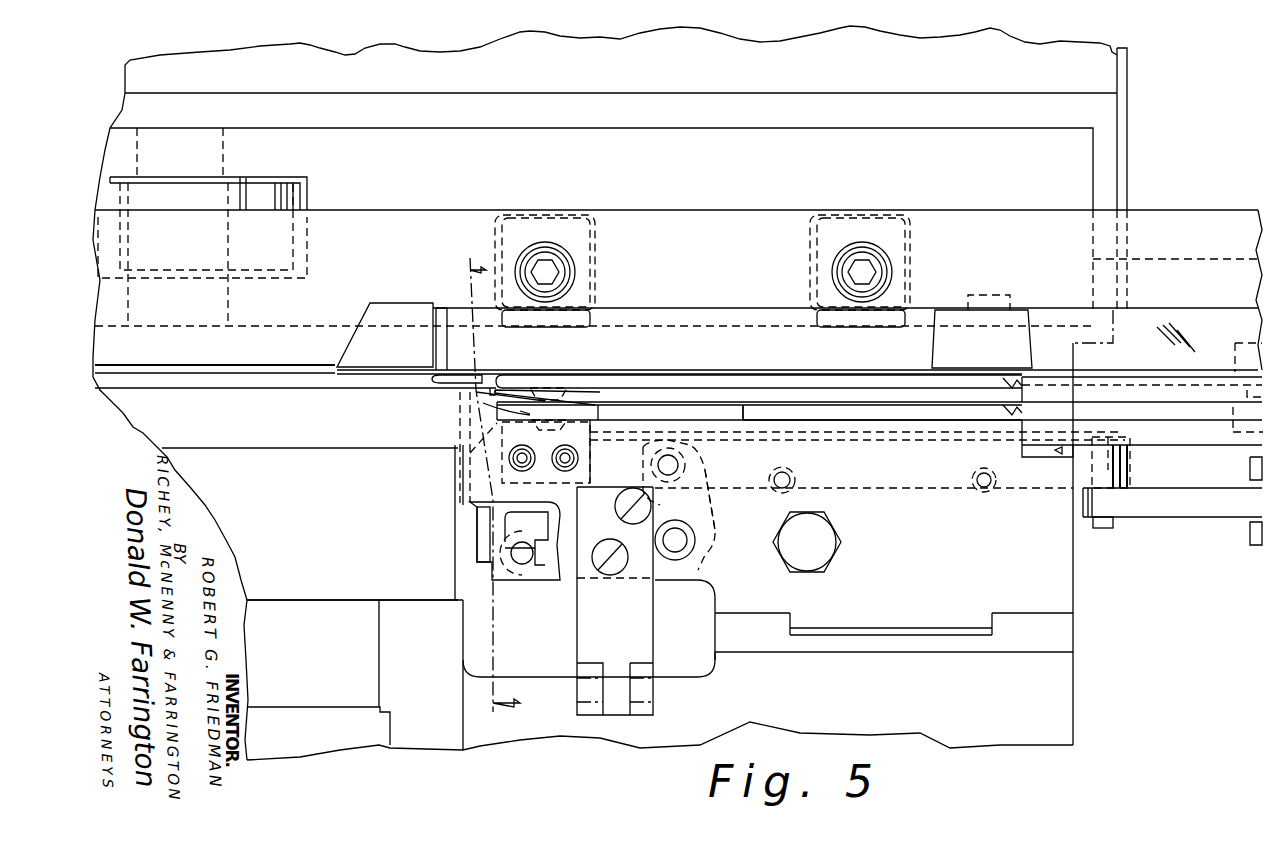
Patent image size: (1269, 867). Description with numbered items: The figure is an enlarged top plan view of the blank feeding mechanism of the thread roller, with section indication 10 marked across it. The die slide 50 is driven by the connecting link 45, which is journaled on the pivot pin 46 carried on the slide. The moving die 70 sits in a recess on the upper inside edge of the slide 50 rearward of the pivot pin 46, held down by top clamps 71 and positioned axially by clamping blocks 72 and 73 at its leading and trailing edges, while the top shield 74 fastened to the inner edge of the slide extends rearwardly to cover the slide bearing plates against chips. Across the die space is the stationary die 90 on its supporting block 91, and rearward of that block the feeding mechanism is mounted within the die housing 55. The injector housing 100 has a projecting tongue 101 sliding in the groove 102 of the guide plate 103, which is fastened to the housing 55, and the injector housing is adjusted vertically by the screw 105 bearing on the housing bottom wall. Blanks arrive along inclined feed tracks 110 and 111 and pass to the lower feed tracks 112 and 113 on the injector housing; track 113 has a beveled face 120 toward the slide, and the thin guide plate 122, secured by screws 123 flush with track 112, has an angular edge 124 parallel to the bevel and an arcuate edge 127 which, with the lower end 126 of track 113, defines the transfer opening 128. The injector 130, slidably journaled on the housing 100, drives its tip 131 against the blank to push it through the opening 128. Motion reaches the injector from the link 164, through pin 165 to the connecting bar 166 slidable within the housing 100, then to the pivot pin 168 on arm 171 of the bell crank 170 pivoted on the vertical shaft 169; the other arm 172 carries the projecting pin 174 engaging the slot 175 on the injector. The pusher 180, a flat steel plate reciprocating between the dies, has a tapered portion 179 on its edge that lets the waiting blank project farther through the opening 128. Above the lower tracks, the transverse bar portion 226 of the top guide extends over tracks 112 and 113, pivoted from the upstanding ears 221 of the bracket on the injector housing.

The section line indicator 10 is at (476, 482).
The connecting link 45 is at (268, 197).
The pivot pin 46 is at (230, 310).
The die slide 50 is at (683, 172).
The die housing 55 is at (1002, 720).
The moving die 70 is at (769, 356).
The top clamps 71 is at (557, 326).
The clamping block 72 is at (412, 355).
The clamping block 73 is at (1000, 353).
The top shield 74 is at (729, 252).
The stationary die 90 is at (317, 427).
The stationary die supporting block 91 is at (316, 521).
The injector housing 100 is at (958, 552).
The projecting tongue 101 is at (845, 628).
The groove 102 is at (957, 632).
The guide plate 103 is at (879, 655).
The screw 105 is at (836, 535).
The feed track 110 is at (1137, 420).
The feed track 111 is at (1188, 395).
The lower feed track 112 is at (818, 412).
The lower feed track 113 is at (712, 403).
The beveled face 120 is at (530, 412).
The guide plate 122 is at (578, 477).
The screws 123 is at (527, 462).
The angularly extending edge 124 is at (540, 450).
The lower end 126 is at (493, 390).
The arcuate edge 127 is at (483, 404).
The transfer opening 128 is at (478, 393).
The injector 130 is at (490, 517).
The injector tip 131 is at (455, 461).
The link 164 is at (1190, 520).
The pin 165 is at (1108, 530).
The connecting bar 166 is at (1131, 475).
The pivot pin 168 is at (686, 466).
The vertical shaft 169 is at (680, 548).
The bell crank 170 is at (700, 550).
The arm 171 is at (694, 504).
The arm 172 is at (555, 582).
The projecting pin 174 is at (525, 565).
The slot 175 is at (540, 540).
The tapered or recessed portion 179 is at (549, 385).
The pusher 180 is at (707, 382).
The upstanding ears 221 is at (590, 710).
The transverse bar portion 226 is at (648, 635).